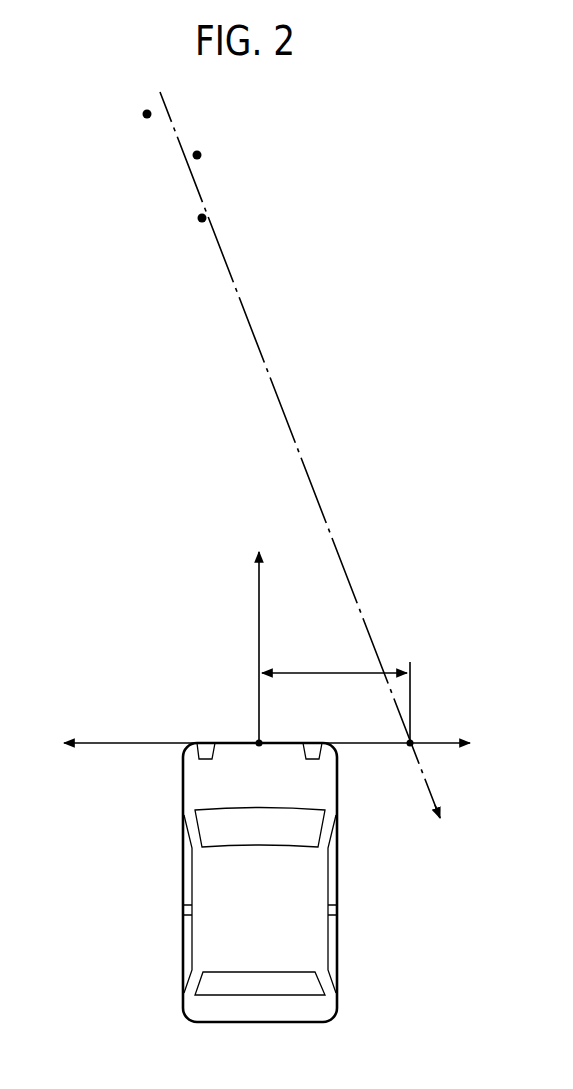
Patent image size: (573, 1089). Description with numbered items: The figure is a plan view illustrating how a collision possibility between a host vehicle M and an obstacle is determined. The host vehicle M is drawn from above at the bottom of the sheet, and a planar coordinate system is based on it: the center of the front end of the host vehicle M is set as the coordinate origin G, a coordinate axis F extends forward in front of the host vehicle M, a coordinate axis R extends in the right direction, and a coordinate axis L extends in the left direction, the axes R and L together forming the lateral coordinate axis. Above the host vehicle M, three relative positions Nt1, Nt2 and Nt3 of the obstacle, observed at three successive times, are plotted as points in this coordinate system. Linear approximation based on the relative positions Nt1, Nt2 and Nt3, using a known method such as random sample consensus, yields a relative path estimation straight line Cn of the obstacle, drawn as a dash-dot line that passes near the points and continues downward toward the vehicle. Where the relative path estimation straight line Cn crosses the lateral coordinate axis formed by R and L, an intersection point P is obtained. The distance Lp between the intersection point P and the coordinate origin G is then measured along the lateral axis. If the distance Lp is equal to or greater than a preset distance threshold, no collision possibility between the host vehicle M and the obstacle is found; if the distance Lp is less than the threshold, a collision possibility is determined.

The relative path estimation straight line Cn is at (253, 337).
The relative position of obstacle at time t1 Nt1 is at (143, 115).
The relative position of obstacle at time t2 Nt2 is at (201, 155).
The relative position of obstacle at time t3 Nt3 is at (198, 219).
The coordinate axis extending in front of host vehicle F is at (258, 628).
The coordinate axis extending in left direction L is at (148, 744).
The coordinate axis extending in right direction R is at (381, 744).
The coordinate origin G is at (257, 741).
The intersection point P is at (412, 741).
The distance between intersection point and coordinate origin Lp is at (335, 672).
The host vehicle M is at (183, 883).